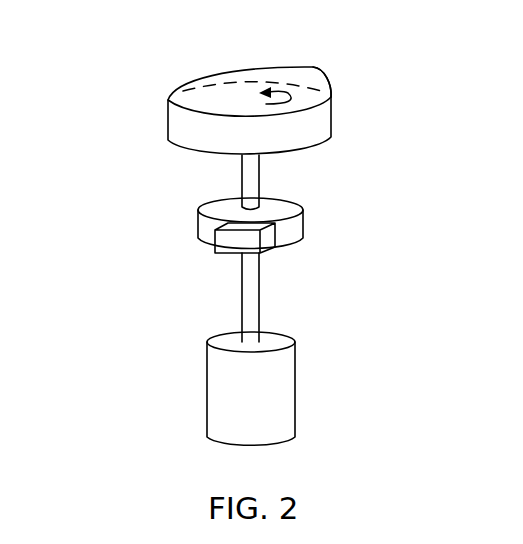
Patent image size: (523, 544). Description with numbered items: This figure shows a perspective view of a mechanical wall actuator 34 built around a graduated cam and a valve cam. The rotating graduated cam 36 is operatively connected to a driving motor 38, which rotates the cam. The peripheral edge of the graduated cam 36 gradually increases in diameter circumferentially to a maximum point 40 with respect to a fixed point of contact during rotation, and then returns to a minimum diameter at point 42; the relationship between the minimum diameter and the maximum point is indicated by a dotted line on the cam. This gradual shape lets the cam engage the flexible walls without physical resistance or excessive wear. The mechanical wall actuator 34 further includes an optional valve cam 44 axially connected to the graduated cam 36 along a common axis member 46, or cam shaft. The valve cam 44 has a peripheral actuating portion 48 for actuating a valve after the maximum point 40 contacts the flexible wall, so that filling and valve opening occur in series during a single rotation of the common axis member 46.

The mechanical wall actuator 34 is at (145, 77).
The graduated cam 36 is at (264, 146).
The driving motor 38 is at (264, 404).
The maximum point 40 is at (322, 62).
The minimum diameter point 42 is at (347, 99).
The valve cam 44 is at (305, 216).
The common axis member 46 is at (260, 293).
The actuating portion 48 is at (217, 251).